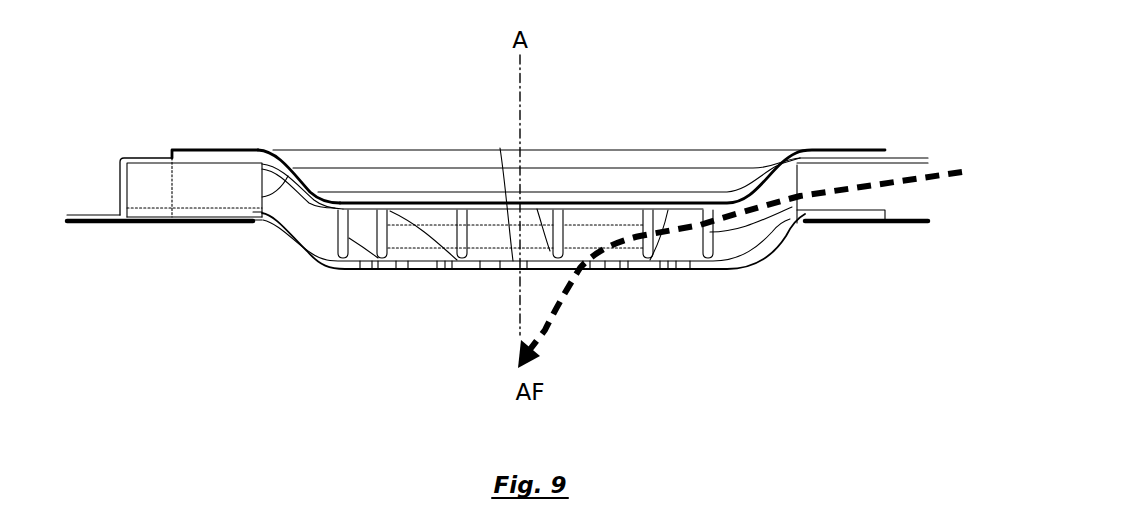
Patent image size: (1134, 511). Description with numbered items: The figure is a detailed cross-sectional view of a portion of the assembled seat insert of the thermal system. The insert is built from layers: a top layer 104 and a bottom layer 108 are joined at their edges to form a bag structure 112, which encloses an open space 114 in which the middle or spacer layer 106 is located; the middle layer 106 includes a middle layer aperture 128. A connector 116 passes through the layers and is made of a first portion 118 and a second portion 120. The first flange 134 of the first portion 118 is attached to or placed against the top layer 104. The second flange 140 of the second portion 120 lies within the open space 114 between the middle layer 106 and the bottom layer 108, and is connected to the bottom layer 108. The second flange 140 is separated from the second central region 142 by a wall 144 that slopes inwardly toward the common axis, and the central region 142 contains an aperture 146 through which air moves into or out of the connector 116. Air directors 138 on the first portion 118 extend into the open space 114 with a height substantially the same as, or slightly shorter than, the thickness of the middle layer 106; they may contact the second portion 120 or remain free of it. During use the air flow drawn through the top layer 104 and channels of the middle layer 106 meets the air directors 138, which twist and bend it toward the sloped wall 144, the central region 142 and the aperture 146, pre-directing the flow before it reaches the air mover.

The top layer 104 is at (902, 157).
The middle layer 106 is at (194, 197).
The bottom layer 108 is at (132, 224).
The bag structure 112 is at (937, 143).
The open space 114 is at (821, 185).
The connector 116 is at (622, 173).
The first portion 118 is at (717, 159).
The second portion 120 is at (342, 277).
The middle layer aperture 128 is at (268, 194).
The first flange 134 is at (213, 149).
The air directors 138 is at (443, 238).
The second flange 140 is at (225, 214).
The second central region 142 is at (692, 264).
The wall 144 is at (293, 235).
The aperture 146 is at (688, 380).